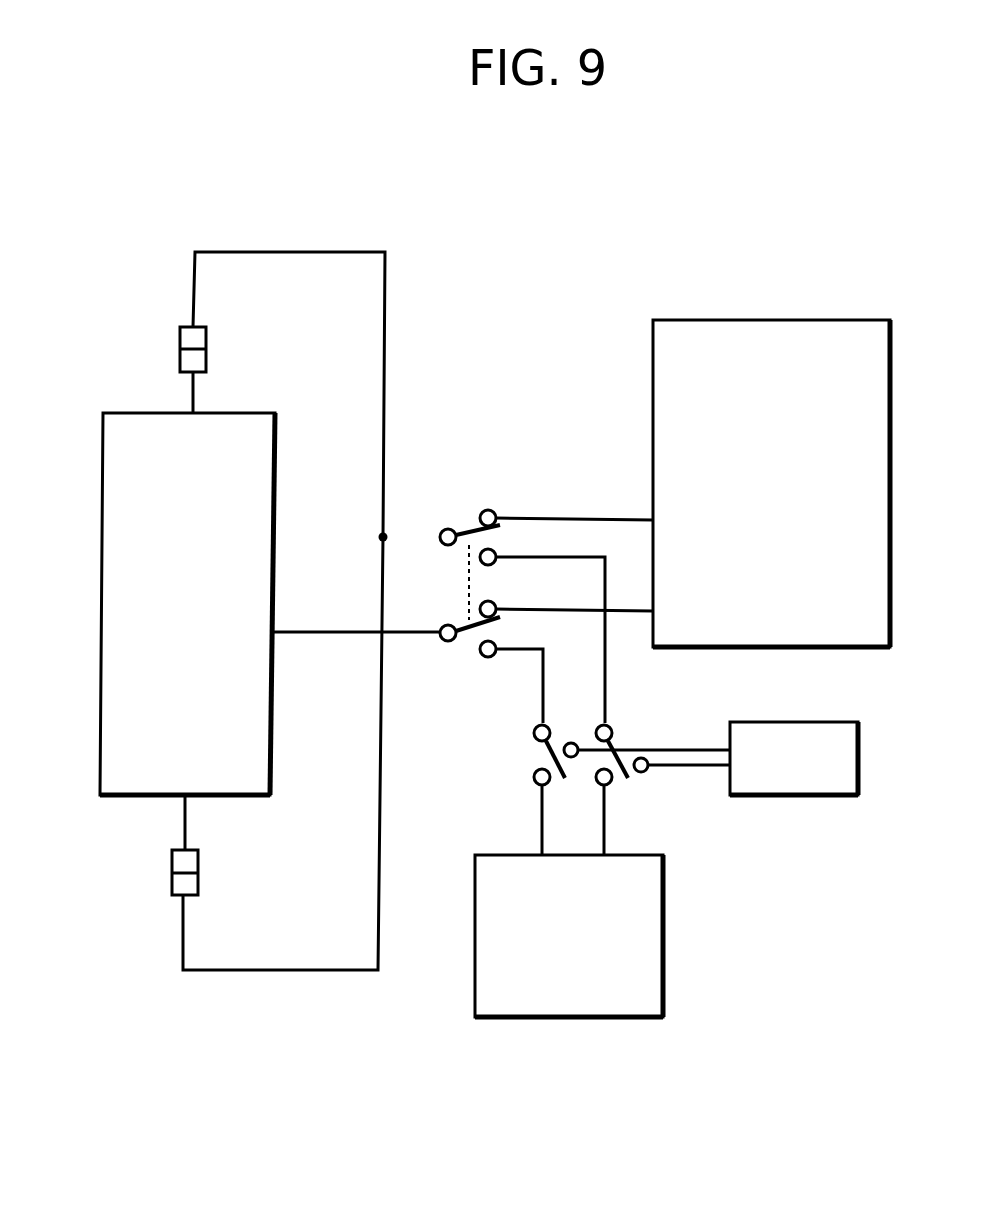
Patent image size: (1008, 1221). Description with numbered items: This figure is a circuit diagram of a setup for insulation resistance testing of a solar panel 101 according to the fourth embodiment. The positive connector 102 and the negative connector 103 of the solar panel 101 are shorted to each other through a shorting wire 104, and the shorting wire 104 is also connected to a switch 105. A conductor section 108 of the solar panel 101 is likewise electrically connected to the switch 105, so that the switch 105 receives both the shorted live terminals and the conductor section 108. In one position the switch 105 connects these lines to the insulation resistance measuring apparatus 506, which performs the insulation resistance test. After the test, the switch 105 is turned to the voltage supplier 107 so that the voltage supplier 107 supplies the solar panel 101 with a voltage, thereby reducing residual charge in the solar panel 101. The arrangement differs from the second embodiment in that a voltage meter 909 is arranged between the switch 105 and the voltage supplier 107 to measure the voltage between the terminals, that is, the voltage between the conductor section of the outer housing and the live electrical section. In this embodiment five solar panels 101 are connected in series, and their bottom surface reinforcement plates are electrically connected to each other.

The solar panel 101 is at (103, 612).
The positive connector 102 is at (206, 353).
The negative connector 103 is at (198, 878).
The shorting wire 104 is at (302, 252).
The switch 105 is at (473, 530).
The voltage supplier 107 is at (663, 968).
The conductor section 108 is at (275, 633).
The insulation resistance measuring apparatus 506 is at (772, 320).
The voltage meter 909 is at (797, 795).